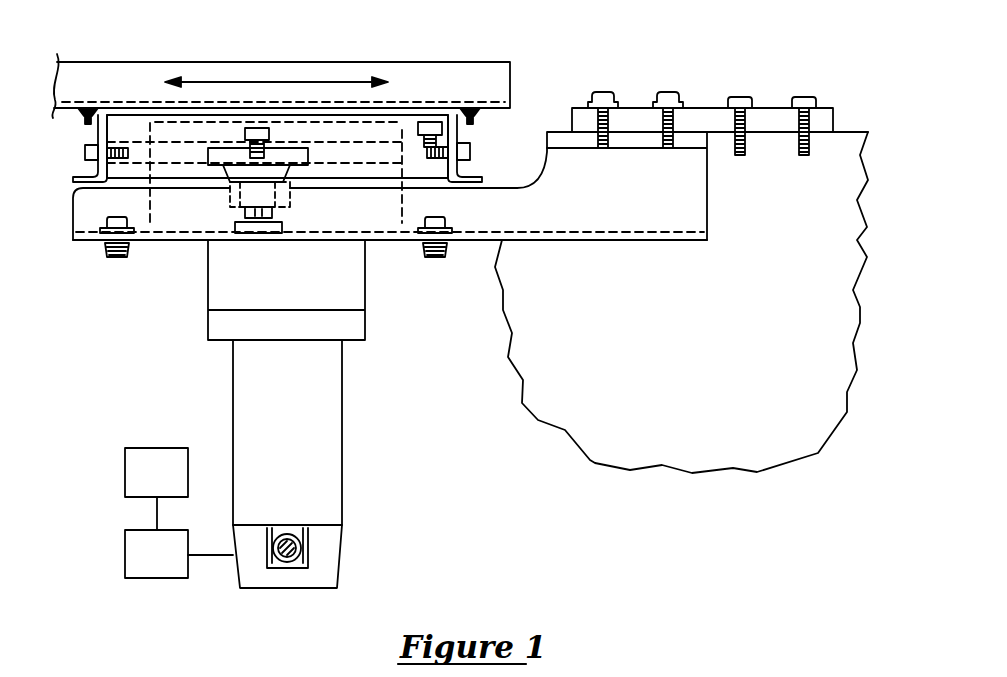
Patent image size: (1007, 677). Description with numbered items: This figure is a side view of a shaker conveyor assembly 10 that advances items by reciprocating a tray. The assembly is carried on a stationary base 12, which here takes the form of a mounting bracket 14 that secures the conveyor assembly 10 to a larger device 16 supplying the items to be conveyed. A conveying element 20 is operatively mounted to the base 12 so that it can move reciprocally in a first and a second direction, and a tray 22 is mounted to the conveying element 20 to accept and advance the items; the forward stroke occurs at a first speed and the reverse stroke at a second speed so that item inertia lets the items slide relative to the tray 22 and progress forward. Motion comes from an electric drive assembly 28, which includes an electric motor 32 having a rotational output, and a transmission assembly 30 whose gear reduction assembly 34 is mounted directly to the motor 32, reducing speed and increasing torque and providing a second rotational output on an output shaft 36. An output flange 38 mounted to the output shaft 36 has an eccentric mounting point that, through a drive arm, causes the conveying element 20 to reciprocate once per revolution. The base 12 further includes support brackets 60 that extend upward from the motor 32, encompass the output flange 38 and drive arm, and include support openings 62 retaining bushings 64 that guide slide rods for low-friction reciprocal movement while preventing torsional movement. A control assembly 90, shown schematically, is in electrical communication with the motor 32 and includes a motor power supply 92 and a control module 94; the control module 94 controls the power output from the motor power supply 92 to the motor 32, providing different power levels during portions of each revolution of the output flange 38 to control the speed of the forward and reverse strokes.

The shaker conveyor assembly 10 is at (553, 64).
The stationary base 12 is at (467, 281).
The mounting bracket 14 is at (708, 197).
The larger device 16 is at (783, 346).
The conveying element 20 is at (79, 141).
The tray 22 is at (233, 62).
The electric drive assembly 28 is at (371, 401).
The transmission assembly 30 is at (191, 321).
The electric motor 32 is at (345, 480).
The gear reduction assembly 34 is at (365, 294).
The output shaft 36 is at (270, 228).
The output flange 38 is at (230, 193).
The support brackets 60 is at (405, 215).
The support openings 62 is at (152, 130).
The bushings 64 is at (147, 168).
The control assembly 90 is at (110, 451).
The motor power supply 92 is at (125, 543).
The control module 94 is at (145, 448).